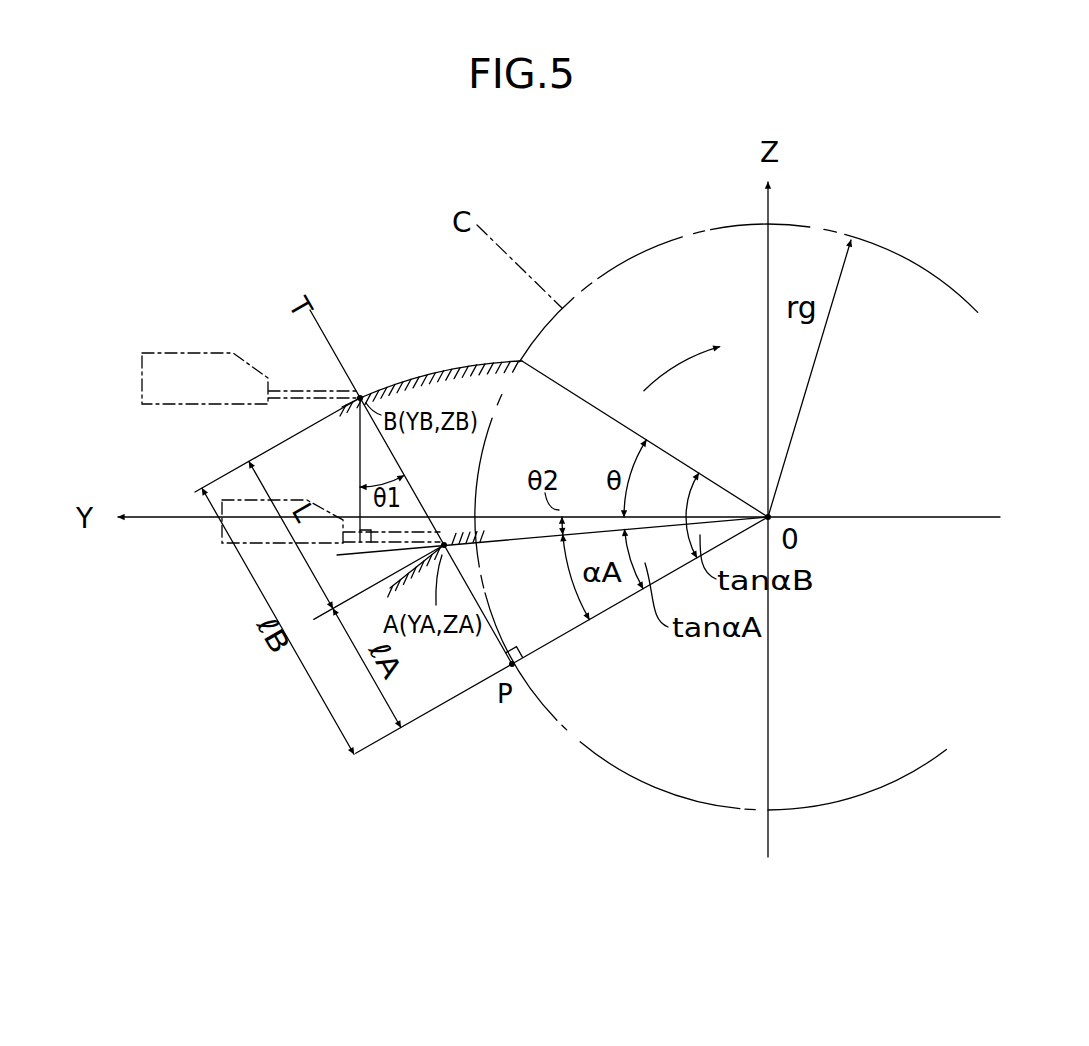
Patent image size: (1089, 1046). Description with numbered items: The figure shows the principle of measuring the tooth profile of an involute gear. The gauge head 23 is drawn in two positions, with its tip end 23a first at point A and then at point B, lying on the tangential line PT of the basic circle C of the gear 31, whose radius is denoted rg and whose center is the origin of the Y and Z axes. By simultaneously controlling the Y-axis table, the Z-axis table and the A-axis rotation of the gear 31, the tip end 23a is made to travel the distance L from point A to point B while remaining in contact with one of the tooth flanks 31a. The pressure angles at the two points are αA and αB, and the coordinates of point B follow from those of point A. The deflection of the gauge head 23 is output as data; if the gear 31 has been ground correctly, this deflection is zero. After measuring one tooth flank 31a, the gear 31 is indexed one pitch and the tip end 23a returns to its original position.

The gauge head 23 is at (293, 390).
The tip end of the gauge head 23a is at (362, 391).
The gear 31 is at (593, 725).
The tooth flank 31a is at (408, 576).